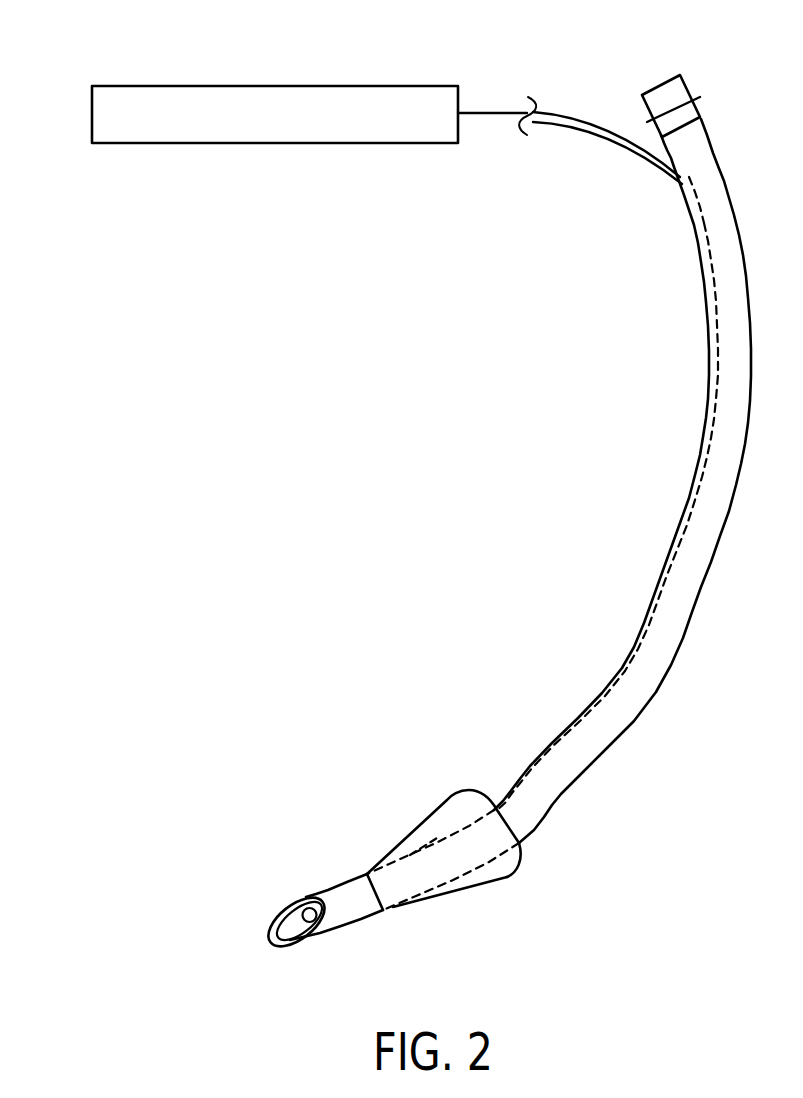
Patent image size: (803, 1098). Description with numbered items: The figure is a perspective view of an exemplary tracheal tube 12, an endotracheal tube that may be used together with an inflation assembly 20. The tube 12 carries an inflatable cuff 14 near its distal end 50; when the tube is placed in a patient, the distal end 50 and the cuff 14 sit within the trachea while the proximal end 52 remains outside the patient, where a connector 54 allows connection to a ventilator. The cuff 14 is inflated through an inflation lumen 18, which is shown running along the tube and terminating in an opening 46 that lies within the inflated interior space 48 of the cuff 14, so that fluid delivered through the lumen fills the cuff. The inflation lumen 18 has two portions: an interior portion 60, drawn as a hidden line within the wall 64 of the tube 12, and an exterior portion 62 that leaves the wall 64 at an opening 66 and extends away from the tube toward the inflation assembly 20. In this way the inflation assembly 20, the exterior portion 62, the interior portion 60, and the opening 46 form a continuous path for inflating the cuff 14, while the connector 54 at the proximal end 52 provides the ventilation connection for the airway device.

The tracheal tube 12 is at (122, 275).
The cuff 14 is at (457, 789).
The inflation lumen 18 is at (582, 129).
The inflation assembly 20 is at (272, 86).
The opening 46 is at (404, 847).
The inflated interior space 48 is at (470, 882).
The distal end 50 is at (285, 903).
The proximal end 52 is at (700, 113).
The connector 54 is at (686, 86).
The interior portion 60 is at (614, 681).
The exterior portion 62 is at (617, 131).
The wall 64 is at (698, 467).
The opening 66 is at (680, 184).